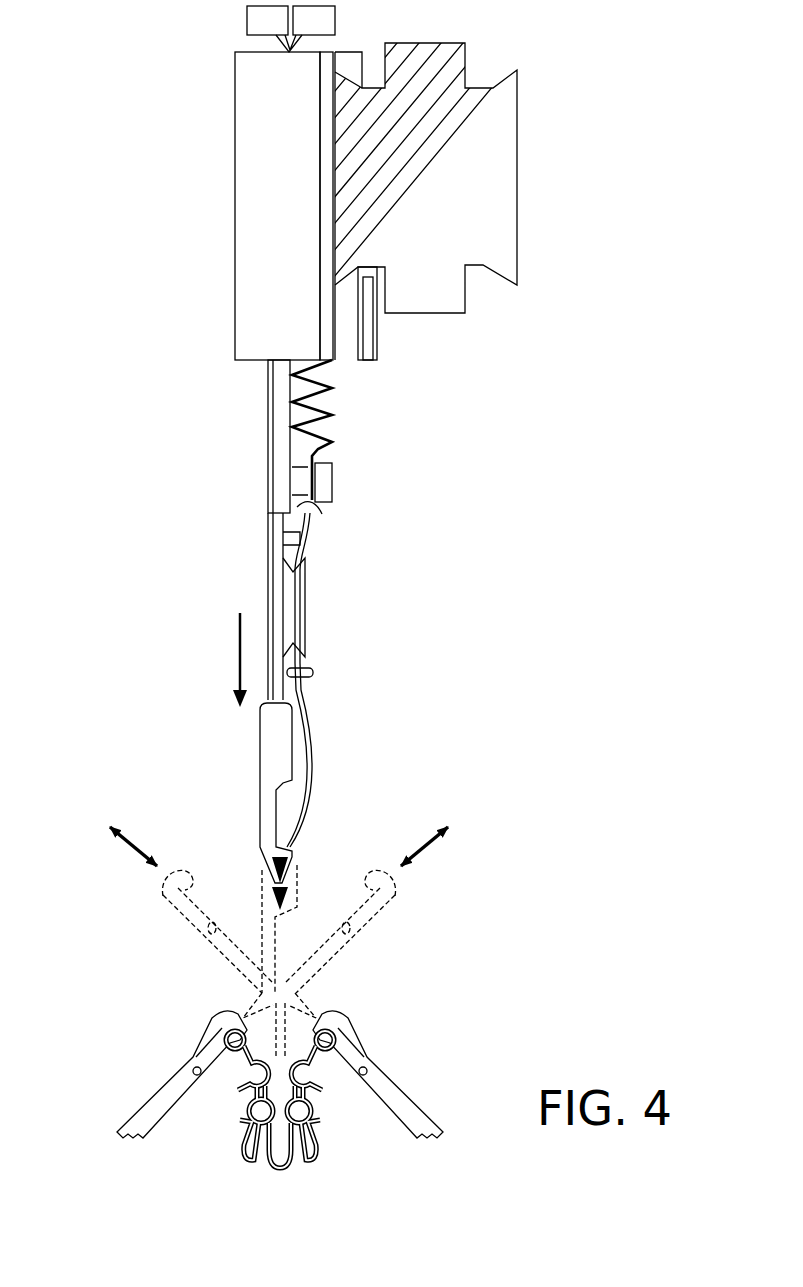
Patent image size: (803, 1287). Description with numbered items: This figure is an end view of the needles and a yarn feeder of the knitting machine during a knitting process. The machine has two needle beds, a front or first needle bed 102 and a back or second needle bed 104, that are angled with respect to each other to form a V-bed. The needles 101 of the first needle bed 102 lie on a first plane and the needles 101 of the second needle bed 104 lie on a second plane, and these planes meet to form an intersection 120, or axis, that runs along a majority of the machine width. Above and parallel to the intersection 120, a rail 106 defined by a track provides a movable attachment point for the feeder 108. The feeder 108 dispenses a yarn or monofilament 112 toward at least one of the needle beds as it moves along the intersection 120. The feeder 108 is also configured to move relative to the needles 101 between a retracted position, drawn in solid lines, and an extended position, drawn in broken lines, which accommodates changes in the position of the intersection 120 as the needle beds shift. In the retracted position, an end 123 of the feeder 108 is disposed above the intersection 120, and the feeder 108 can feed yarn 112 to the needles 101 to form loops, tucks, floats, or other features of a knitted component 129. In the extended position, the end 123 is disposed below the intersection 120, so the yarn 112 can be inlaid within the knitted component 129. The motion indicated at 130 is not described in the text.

The needles 101 is at (232, 1123).
The first needle bed 102 is at (162, 1100).
The second needle bed 104 is at (393, 1103).
The rail 106 is at (457, 182).
The feeder 108 is at (265, 162).
The yarn 112 is at (312, 758).
The intersection 120 is at (289, 989).
The end of feeder 123 is at (297, 883).
The knitted component 129 is at (283, 1167).
The outward movement 130 is at (137, 843).